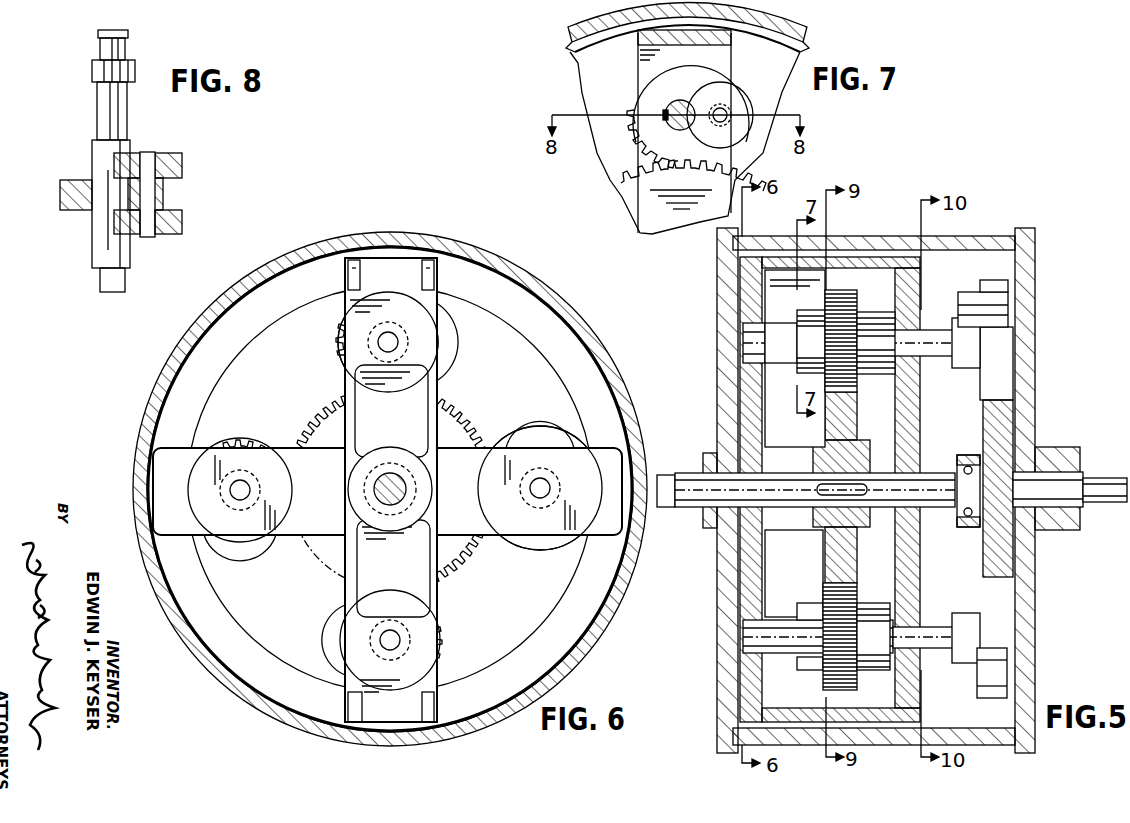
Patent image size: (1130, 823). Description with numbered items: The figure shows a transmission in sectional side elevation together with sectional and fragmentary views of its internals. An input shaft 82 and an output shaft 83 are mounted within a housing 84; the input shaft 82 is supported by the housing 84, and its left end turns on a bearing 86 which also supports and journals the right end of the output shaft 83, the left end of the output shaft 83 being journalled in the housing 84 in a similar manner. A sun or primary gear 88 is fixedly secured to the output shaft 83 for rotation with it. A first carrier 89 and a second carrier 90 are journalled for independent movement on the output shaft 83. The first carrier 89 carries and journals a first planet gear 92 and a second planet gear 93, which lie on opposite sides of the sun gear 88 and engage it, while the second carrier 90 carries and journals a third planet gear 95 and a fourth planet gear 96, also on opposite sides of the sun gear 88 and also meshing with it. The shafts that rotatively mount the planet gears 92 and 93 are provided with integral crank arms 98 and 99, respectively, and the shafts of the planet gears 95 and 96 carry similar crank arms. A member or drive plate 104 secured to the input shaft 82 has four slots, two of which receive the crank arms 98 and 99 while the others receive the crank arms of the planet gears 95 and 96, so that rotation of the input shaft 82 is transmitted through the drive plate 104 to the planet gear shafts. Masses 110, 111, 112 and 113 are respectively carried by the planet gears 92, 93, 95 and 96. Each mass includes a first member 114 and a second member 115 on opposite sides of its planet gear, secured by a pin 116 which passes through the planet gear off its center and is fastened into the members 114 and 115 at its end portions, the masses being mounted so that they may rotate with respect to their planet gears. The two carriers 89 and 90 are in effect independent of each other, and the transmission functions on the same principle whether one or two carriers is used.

In FIG. 5, the input shaft 82 is at (1112, 478).
In FIG. 5, the output shaft 83 is at (695, 473).
In FIG. 6, the output shaft 83 is at (372, 487).
In FIG. 5, the housing 84 is at (1030, 275).
In FIG. 6, the housing 84 is at (338, 250).
In FIG. 5, the bearing 86 is at (965, 455).
In FIG. 5, the sun gear 88 is at (845, 432).
In FIG. 6, the sun gear 88 is at (325, 415).
In FIG. 5, the first carrier 89 is at (750, 310).
In FIG. 6, the first carrier 89 is at (412, 268).
In FIG. 5, the second carrier 90 is at (778, 527).
In FIG. 6, the second carrier 90 is at (178, 465).
In FIG. 8, the first planet gear 92 is at (84, 178).
In FIG. 7, the first planet gear 92 is at (636, 112).
In FIG. 5, the first planet gear 92 is at (848, 295).
In FIG. 6, the first planet gear 92 is at (338, 345).
In FIG. 5, the second planet gear 93 is at (835, 670).
In FIG. 6, the second planet gear 93 is at (445, 640).
In FIG. 6, the third planet gear 95 is at (240, 447).
In FIG. 6, the fourth planet gear 96 is at (548, 552).
In FIG. 8, the crank arm 98 is at (92, 72).
In FIG. 5, the crank arm 98 is at (965, 330).
In FIG. 5, the crank arm 99 is at (965, 620).
In FIG. 5, the drive plate 104 is at (1000, 405).
In FIG. 6, the drive plate 104 is at (517, 360).
In FIG. 7, the mass 110 is at (733, 107).
In FIG. 5, the mass 110 is at (813, 315).
In FIG. 6, the mass 110 is at (496, 346).
In FIG. 5, the mass 111 is at (812, 607).
In FIG. 6, the mass 111 is at (330, 628).
In FIG. 6, the mass 112 is at (245, 555).
In FIG. 6, the mass 113 is at (527, 430).
In FIG. 8, the first member 114 is at (165, 237).
In FIG. 7, the first member 114 is at (752, 112).
In FIG. 5, the first member 114 is at (811, 341).
In FIG. 8, the second member 115 is at (165, 152).
In FIG. 8, the pin 116 is at (150, 190).
In FIG. 5, the pin 116 is at (868, 345).